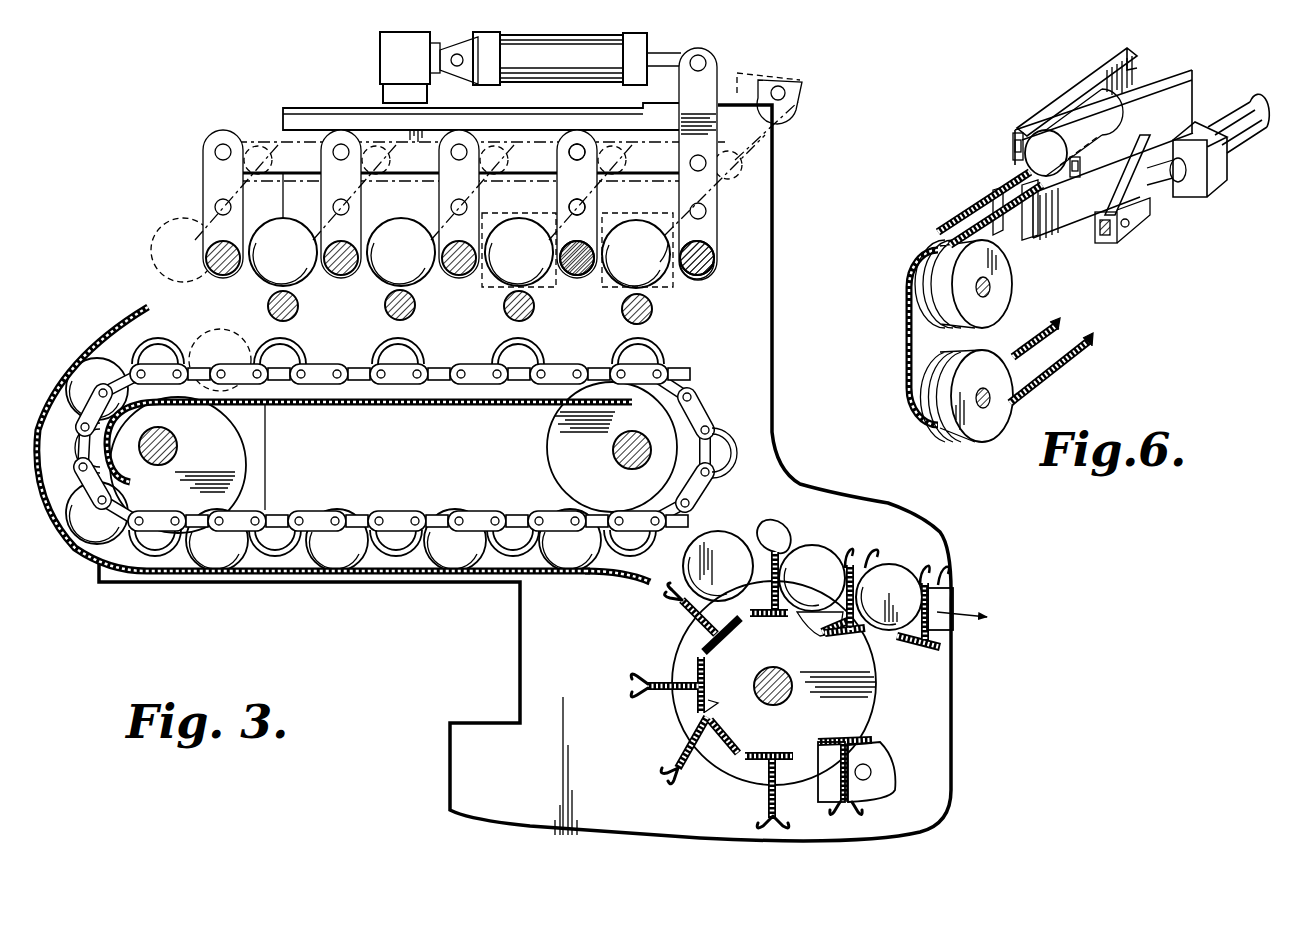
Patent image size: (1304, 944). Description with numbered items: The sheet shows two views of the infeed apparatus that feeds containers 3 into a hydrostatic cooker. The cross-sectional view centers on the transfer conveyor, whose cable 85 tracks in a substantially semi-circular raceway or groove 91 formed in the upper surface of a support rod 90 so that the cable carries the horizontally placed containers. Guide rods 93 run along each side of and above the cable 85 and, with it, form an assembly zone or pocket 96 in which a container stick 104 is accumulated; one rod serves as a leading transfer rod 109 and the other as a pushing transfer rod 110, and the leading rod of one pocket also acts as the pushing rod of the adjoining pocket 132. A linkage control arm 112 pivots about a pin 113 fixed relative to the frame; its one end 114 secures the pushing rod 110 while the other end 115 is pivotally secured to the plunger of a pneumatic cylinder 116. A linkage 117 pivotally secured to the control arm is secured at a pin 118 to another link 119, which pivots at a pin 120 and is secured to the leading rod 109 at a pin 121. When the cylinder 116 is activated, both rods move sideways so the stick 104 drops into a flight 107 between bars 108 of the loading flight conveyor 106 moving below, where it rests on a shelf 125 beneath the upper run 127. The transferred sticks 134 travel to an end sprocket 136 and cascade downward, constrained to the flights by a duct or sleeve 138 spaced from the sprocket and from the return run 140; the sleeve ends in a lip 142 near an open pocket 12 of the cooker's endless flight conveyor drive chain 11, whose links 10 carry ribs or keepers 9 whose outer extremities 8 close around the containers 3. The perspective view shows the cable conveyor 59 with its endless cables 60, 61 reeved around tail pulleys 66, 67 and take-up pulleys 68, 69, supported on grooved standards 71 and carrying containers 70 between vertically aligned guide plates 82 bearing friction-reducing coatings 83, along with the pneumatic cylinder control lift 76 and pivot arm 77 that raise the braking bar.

In FIG. 3, the pneumatic cylinder 116 is at (578, 47).
In FIG. 3, the other end of control arm 115 is at (697, 54).
In FIG. 3, the linkage control arm 112 is at (712, 64).
In FIG. 3, the pin 118 is at (580, 150).
In FIG. 3, the linkage 117 is at (643, 152).
In FIG. 3, the link 119 is at (566, 168).
In FIG. 3, the pin 120 is at (570, 208).
In FIG. 3, the assembly zone or pocket 96 is at (658, 212).
In FIG. 3, the pin 121 is at (552, 250).
In FIG. 3, the raceway or groove 91 is at (645, 292).
In FIG. 3, the pin 113 is at (706, 213).
In FIG. 3, the pushing or following transfer rod 110 is at (715, 247).
In FIG. 3, the one end of control arm 114 is at (714, 272).
In FIG. 3, the guide rods 93 is at (565, 264).
In FIG. 3, the cable 85 is at (393, 292).
In FIG. 3, the adjoining pocket 132 is at (482, 295).
In FIG. 3, the leading transfer rod 109 is at (531, 307).
In FIG. 3, the support bar or rod 90 is at (622, 310).
In FIG. 3, the container stick 104 is at (652, 284).
In FIG. 3, the transferred sticks 134 is at (214, 330).
In FIG. 3, the upper run 127 is at (378, 360).
In FIG. 3, the spacers or bars 108 is at (508, 355).
In FIG. 3, the voids or flights 107 is at (597, 366).
In FIG. 3, the loading flight conveyor 106 is at (716, 400).
In FIG. 3, the end sprocket 136 is at (237, 448).
In FIG. 3, the shelf 125 is at (457, 407).
In FIG. 3, the bottom or return run 140 is at (392, 520).
In FIG. 3, the duct or sleeve 138 is at (283, 577).
In FIG. 3, the lip 142 is at (620, 583).
In FIG. 3, the outer extremities 8 is at (763, 527).
In FIG. 3, the ribs or keepers 9 is at (833, 588).
In FIG. 3, the containers 3 is at (793, 608).
In FIG. 6, the containers 3 is at (1050, 118).
In FIG. 3, the links 10 is at (829, 636).
In FIG. 3, the endless flight conveyor drive chain 11 is at (930, 647).
In FIG. 3, the pockets 12 is at (668, 641).
In FIG. 6, the coverings or coatings 83 is at (1109, 62).
In FIG. 6, the containers 70 is at (1077, 107).
In FIG. 6, the guide plates 82 is at (1012, 147).
In FIG. 6, the endless cable 61 is at (980, 206).
In FIG. 6, the endless cable 60 is at (957, 215).
In FIG. 6, the tail or driven pulley 66 is at (910, 253).
In FIG. 6, the bars or standards 71 is at (1013, 218).
In FIG. 6, the pivot arm 77 is at (1135, 203).
In FIG. 6, the pneumatic cylinder control lift 76 is at (1237, 152).
In FIG. 6, the cable conveyor 59 is at (1160, 260).
In FIG. 6, the tail or driven pulley 67 is at (990, 312).
In FIG. 6, the take-up pulley or sheave 69 is at (1000, 362).
In FIG. 6, the take-up pulley or sheave 68 is at (905, 395).